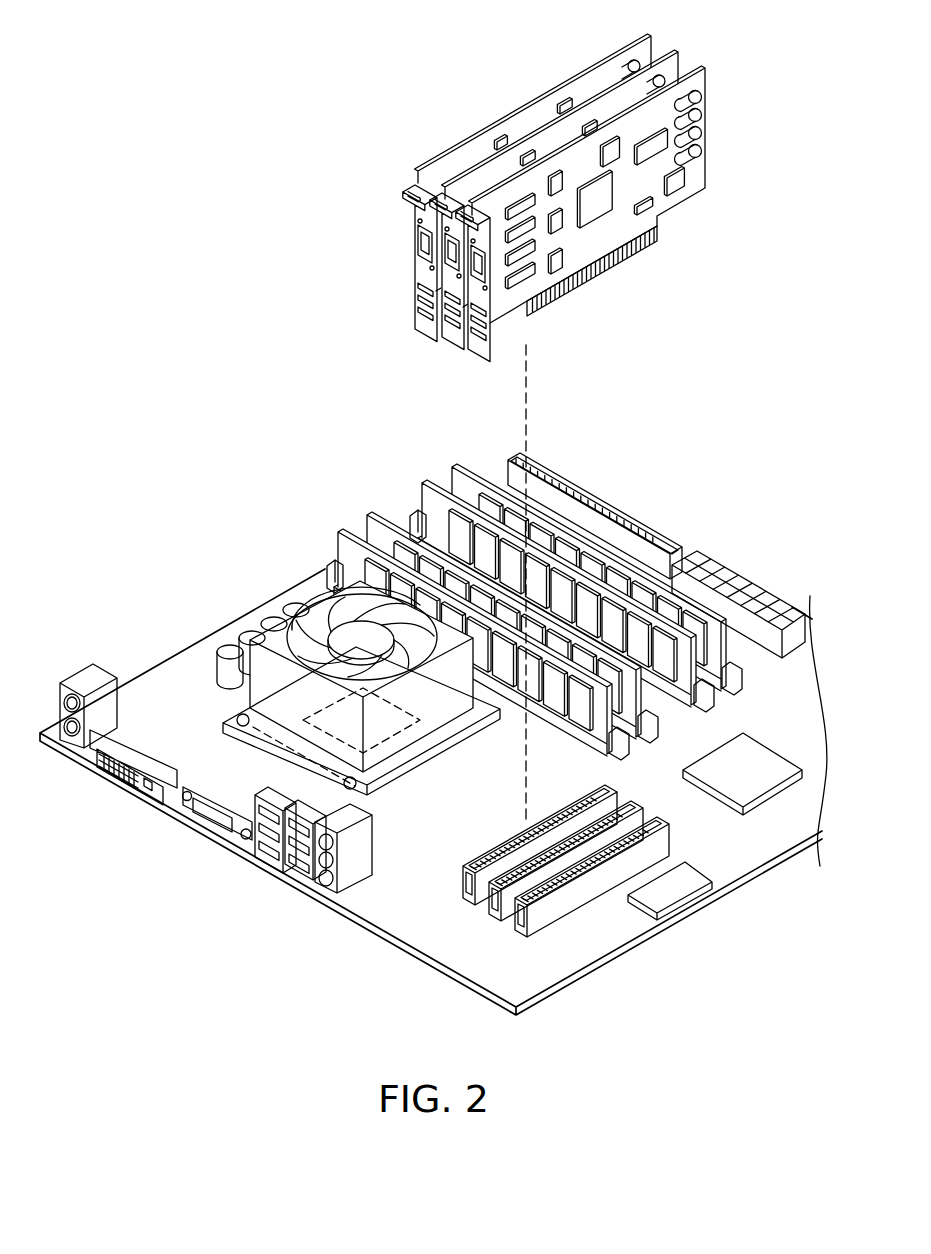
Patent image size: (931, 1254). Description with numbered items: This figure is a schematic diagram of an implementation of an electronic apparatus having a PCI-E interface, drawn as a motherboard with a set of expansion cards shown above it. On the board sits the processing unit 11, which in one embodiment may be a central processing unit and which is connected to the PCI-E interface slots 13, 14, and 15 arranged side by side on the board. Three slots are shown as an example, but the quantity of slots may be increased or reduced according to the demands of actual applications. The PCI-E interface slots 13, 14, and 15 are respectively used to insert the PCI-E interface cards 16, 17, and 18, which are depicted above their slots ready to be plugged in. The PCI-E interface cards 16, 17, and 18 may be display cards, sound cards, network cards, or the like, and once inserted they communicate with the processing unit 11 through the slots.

The processing unit 11 is at (284, 697).
The PCI-E interface slot 13 is at (463, 898).
The PCI-E interface slot 14 is at (500, 914).
The PCI-E interface slot 15 is at (545, 916).
The PCI-E interface card 16 is at (430, 330).
The PCI-E interface card 17 is at (455, 339).
The PCI-E interface card 18 is at (481, 352).